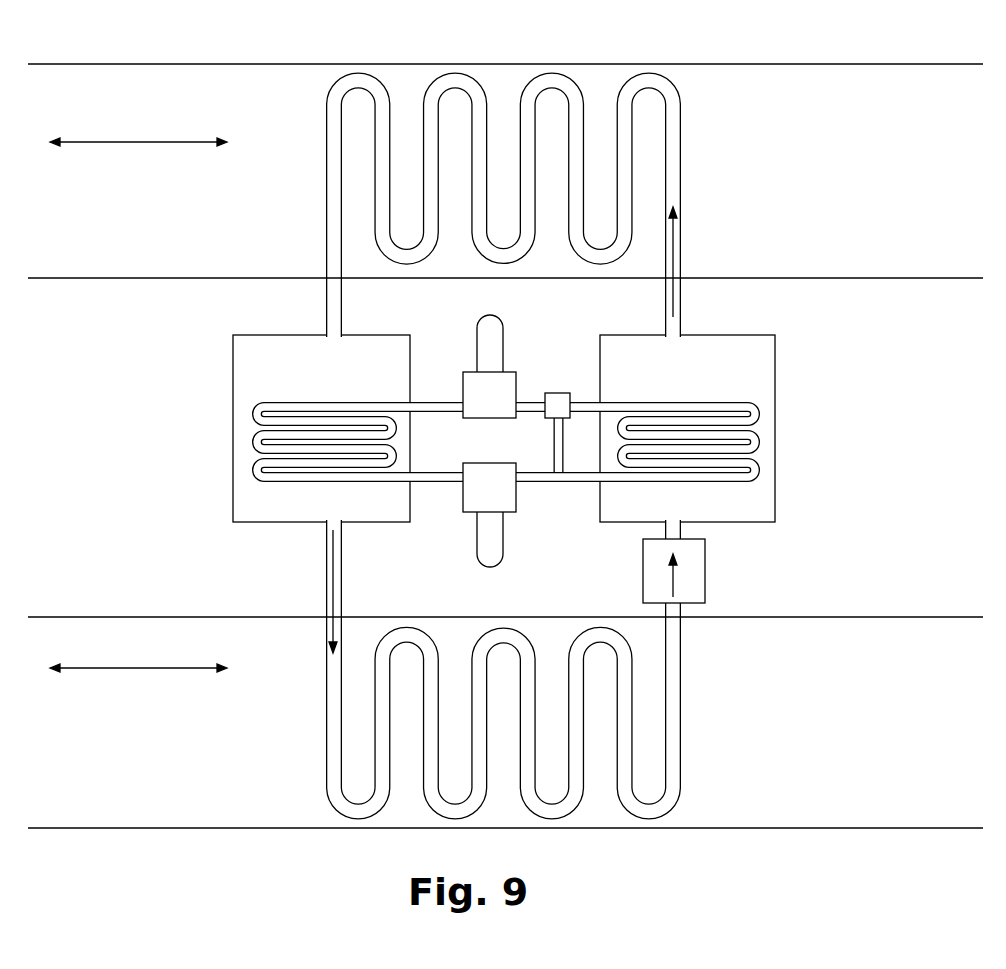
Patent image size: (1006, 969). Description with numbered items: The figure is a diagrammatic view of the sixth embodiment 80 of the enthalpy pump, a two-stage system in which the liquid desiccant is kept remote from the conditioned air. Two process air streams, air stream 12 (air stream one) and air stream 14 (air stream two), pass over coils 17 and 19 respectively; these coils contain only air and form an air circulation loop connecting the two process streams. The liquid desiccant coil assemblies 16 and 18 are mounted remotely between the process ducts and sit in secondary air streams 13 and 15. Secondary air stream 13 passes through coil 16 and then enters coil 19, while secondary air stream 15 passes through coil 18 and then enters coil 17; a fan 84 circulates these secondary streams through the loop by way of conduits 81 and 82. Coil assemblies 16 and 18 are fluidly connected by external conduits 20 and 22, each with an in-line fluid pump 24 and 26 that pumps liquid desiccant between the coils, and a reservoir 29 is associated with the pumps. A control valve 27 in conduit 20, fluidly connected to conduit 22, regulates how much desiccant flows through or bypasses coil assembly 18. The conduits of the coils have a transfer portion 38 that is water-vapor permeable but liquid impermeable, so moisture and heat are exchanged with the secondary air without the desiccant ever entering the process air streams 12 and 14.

The air stream 12 is at (160, 65).
The air stream 14 is at (178, 617).
The sixth embodiment 80 is at (492, 46).
The coil 17 is at (325, 187).
The coil 19 is at (325, 732).
The coil assembly 16 is at (365, 394).
The coil assembly 18 is at (632, 393).
The air stream 13 is at (333, 527).
The air stream 15 is at (672, 328).
The external conduit 20 is at (430, 400).
The external conduit 22 is at (430, 480).
The fluid pump 24 is at (498, 315).
The fluid pump 26 is at (500, 567).
The control valve 27 is at (557, 393).
The reservoir 29 is at (445, 440).
The transfer portion 38 is at (675, 110).
The conduit 81 is at (681, 307).
The conduit 82 is at (323, 313).
The fan 84 is at (687, 570).